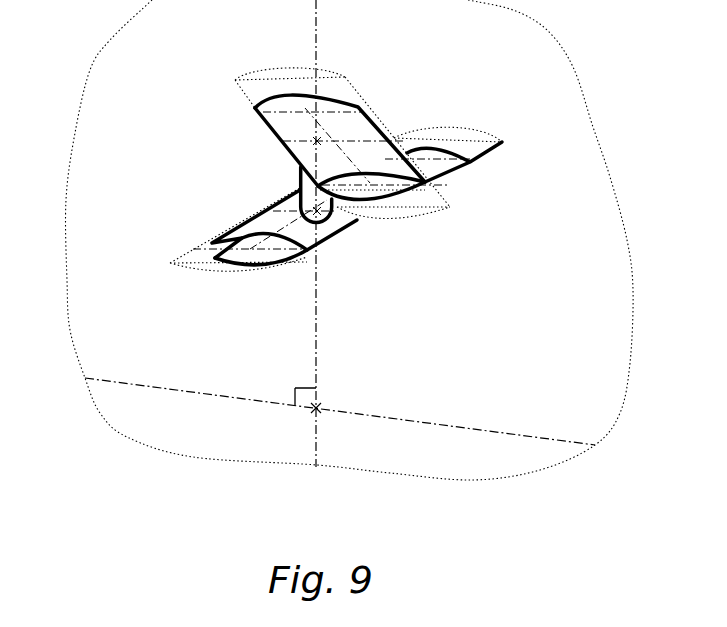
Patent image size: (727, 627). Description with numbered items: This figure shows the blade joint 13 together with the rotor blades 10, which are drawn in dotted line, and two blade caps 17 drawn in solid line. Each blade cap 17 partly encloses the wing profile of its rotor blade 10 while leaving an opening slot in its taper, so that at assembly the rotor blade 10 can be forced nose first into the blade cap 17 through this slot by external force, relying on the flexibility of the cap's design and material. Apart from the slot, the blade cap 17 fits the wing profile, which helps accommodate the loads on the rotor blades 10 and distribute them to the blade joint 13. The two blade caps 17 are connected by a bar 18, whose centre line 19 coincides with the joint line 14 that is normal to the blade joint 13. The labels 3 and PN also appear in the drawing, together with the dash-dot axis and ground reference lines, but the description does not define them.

The ground surface 3 is at (502, 432).
The rotor blade 10 is at (355, 161).
The blade joint 13 is at (490, 187).
The joint line 14 is at (252, 233).
The blade cap 17 is at (260, 125).
The bar 18 is at (298, 178).
The centre line 19 is at (316, 313).
The pivot point PN is at (321, 406).